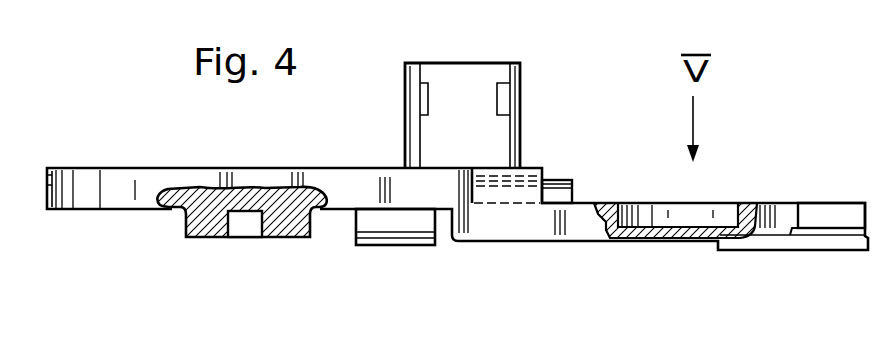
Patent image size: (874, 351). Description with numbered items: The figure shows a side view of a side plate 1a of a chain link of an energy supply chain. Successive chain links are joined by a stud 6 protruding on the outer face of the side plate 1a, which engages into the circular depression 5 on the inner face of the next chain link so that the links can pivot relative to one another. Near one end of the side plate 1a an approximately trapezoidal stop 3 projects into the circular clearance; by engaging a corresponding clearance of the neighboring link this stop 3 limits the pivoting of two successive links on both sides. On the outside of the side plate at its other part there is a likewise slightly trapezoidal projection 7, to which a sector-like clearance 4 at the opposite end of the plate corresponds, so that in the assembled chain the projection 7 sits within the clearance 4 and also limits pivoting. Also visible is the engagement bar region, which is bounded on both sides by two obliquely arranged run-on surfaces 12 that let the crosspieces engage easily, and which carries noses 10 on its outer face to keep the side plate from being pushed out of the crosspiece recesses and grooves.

The side plate 1a is at (147, 168).
The run-on surfaces 12 is at (407, 97).
The noses 10 is at (477, 96).
The stop 3 is at (556, 190).
The stud 6 is at (192, 227).
The projection 7 is at (393, 225).
The circular depression 5 is at (720, 218).
The clearance 4 is at (828, 218).